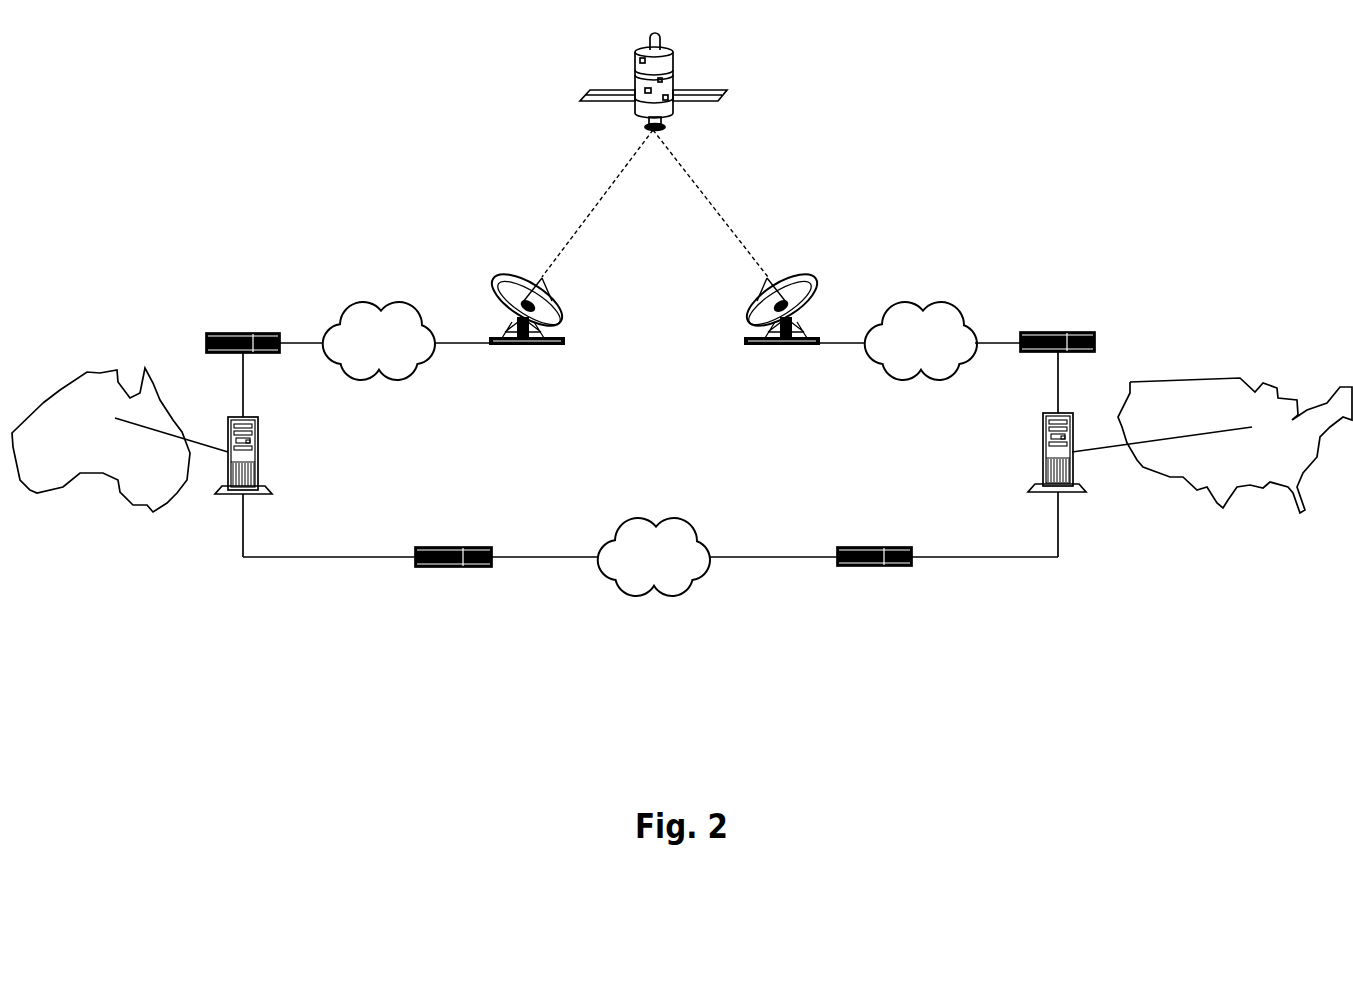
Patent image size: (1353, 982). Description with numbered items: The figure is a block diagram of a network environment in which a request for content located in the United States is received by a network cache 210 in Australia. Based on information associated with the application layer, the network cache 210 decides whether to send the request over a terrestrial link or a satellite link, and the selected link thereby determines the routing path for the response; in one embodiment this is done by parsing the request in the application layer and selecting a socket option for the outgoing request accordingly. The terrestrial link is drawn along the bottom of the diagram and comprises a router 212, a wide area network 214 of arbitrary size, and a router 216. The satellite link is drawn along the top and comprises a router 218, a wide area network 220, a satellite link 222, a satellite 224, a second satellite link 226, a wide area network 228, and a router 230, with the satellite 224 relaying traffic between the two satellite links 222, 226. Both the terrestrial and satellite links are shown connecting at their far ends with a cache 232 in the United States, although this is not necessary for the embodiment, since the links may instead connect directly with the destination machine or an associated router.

The network cache 210 is at (258, 446).
The router 212 is at (450, 547).
The wide area network 214 is at (640, 520).
The router 216 is at (875, 547).
The router 218 is at (243, 333).
The wide area network 220 is at (363, 303).
The satellite link 222 is at (528, 344).
The satellite 224 is at (728, 92).
The satellite link 226 is at (781, 344).
The wide area network 228 is at (937, 303).
The router 230 is at (1060, 332).
The cache 232 is at (1043, 443).